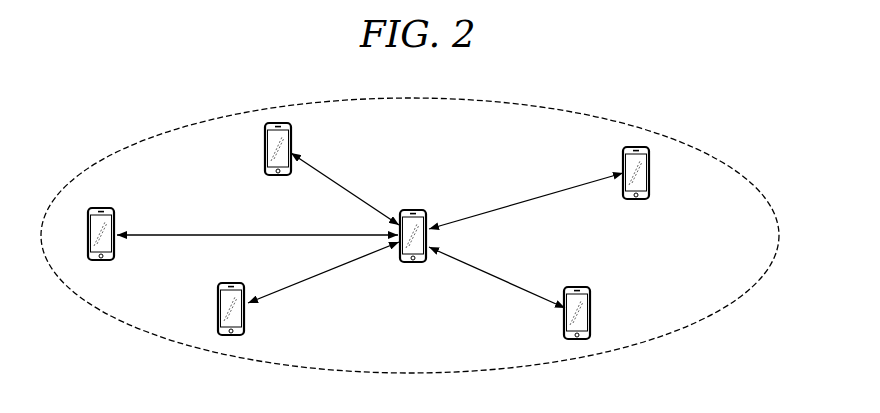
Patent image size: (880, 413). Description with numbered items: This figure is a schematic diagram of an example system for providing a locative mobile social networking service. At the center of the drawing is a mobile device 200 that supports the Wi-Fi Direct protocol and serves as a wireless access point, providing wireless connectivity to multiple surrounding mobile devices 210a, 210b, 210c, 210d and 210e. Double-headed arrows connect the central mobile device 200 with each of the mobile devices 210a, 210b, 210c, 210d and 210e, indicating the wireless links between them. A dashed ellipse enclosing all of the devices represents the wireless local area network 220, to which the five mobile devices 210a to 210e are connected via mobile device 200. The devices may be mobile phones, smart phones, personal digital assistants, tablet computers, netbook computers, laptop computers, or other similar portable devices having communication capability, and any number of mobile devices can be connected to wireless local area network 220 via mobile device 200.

The mobile device 200 is at (412, 210).
The mobile device 210a is at (116, 220).
The mobile device 210b is at (292, 140).
The mobile device 210c is at (650, 172).
The mobile device 210d is at (592, 300).
The mobile device 210e is at (246, 321).
The wireless local area network 220 is at (498, 98).